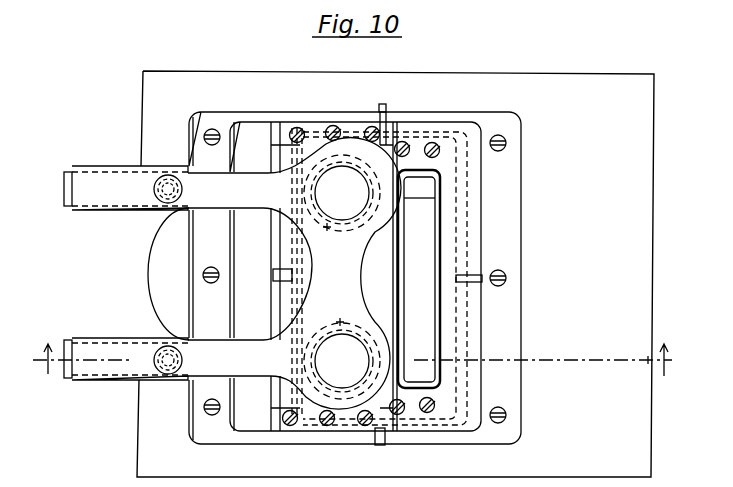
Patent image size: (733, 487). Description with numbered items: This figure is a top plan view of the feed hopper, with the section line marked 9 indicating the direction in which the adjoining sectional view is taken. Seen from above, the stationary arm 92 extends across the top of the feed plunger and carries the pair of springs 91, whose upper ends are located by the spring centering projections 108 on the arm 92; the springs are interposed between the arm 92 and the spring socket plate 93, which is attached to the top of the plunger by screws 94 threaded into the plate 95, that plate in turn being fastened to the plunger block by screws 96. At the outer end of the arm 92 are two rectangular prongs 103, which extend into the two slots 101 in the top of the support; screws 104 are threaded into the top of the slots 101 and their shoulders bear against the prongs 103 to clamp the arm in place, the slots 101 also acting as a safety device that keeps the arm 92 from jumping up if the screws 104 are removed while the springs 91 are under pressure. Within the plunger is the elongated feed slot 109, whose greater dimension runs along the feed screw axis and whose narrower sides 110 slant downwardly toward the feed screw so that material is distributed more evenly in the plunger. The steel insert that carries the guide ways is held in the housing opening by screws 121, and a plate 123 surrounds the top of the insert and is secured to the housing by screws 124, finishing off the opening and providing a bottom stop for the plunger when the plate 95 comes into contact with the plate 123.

The section line 9- 9 is at (353, 360).
The springs 91 is at (327, 147).
The stationary arm 92 is at (350, 278).
The spring socket plate 93 is at (345, 428).
The screws 94 is at (333, 127).
The plate 95 is at (475, 430).
The screws 96 is at (427, 414).
The slots 101 is at (107, 171).
The prongs 103 is at (63, 192).
The screws 104 is at (156, 201).
The spring centering projections 108 is at (325, 232).
The feed slot 109 is at (432, 243).
The narrower sides 110 is at (414, 170).
The screws 121 is at (279, 280).
The plate 123 is at (509, 343).
The screws 124 is at (205, 282).